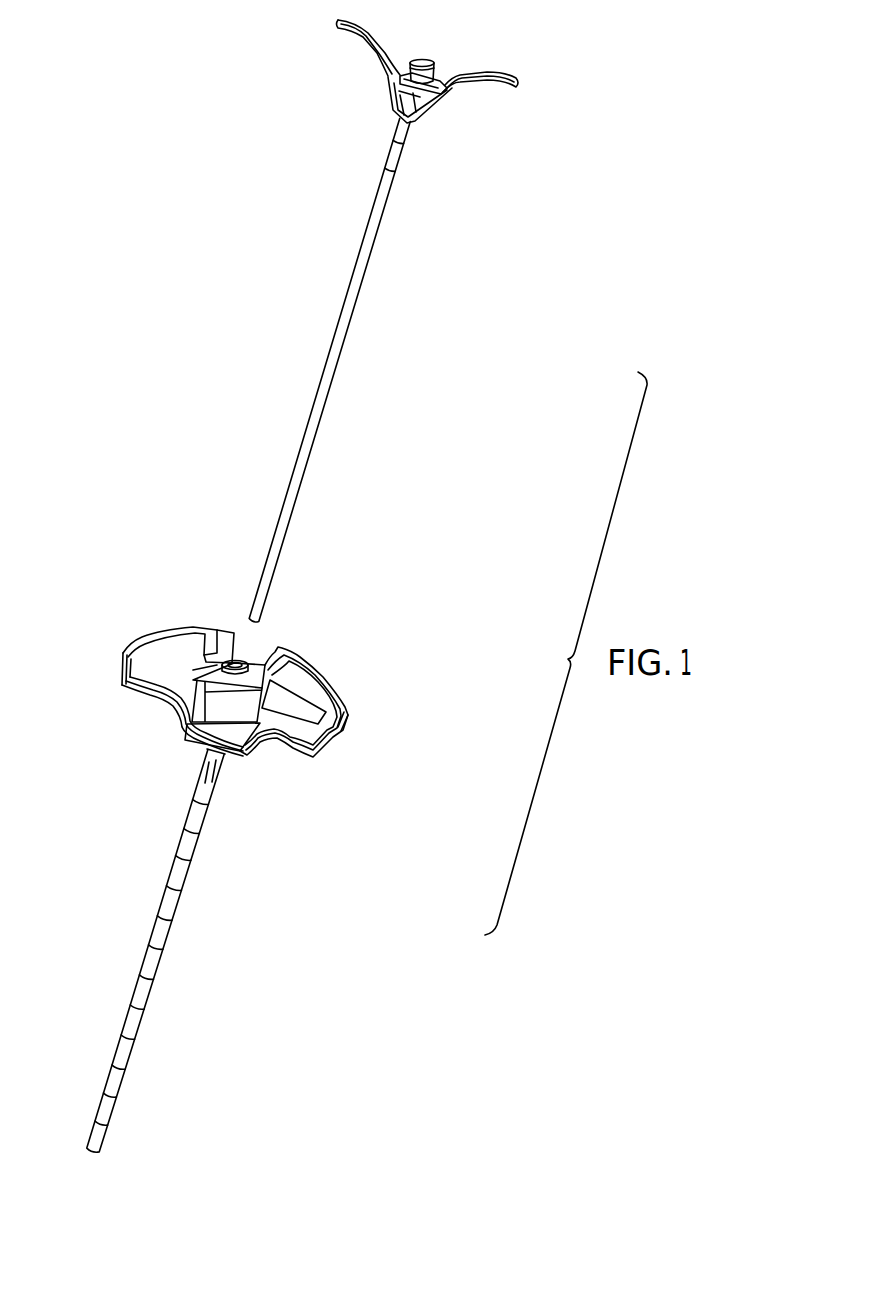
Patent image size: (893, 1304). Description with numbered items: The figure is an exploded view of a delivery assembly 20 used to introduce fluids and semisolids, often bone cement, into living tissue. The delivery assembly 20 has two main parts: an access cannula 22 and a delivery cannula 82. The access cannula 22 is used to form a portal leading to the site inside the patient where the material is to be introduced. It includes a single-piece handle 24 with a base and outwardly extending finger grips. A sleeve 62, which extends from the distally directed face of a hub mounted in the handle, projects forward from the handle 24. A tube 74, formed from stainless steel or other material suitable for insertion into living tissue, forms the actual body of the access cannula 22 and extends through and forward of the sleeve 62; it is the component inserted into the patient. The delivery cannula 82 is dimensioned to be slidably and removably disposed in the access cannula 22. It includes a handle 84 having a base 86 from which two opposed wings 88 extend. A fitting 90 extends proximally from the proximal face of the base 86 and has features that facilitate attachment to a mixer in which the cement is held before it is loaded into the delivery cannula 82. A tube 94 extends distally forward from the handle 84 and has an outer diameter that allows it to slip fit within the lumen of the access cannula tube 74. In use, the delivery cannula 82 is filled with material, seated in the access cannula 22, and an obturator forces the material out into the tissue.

The delivery assembly 20 is at (274, 346).
The access cannula 22 is at (401, 722).
The handle 24 is at (123, 659).
The sleeve 62 is at (212, 752).
The tube 74 is at (160, 967).
The delivery cannula 82 is at (497, 127).
The handle 84 is at (360, 43).
The base 86 is at (423, 121).
The wings 88 is at (337, 25).
The fitting 90 is at (437, 70).
The tube 94 is at (361, 237).